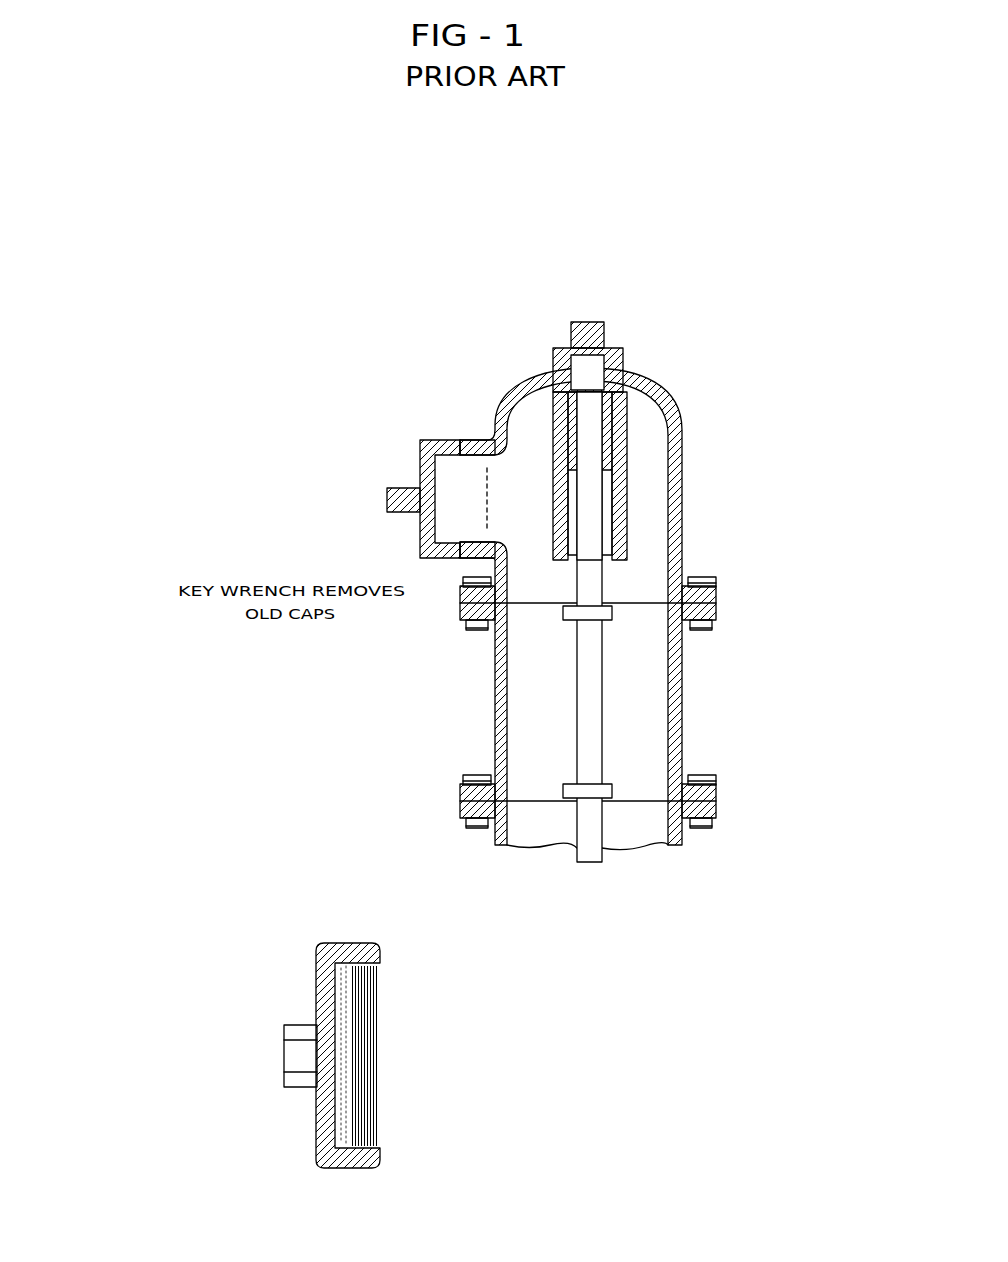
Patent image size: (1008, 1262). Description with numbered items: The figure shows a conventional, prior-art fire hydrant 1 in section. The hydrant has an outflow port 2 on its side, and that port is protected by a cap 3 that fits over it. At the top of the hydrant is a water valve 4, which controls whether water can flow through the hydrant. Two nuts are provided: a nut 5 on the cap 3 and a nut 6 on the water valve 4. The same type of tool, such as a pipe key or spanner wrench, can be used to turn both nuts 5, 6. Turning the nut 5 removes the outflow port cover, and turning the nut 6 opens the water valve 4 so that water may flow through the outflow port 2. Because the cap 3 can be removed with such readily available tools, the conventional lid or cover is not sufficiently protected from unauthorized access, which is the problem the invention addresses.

The fire hydrant 1 is at (688, 515).
The outflow port 2 is at (458, 436).
The cap 3 is at (392, 982).
The water valve 4 is at (566, 320).
The nut 5 is at (283, 1036).
The nut 6 is at (608, 326).